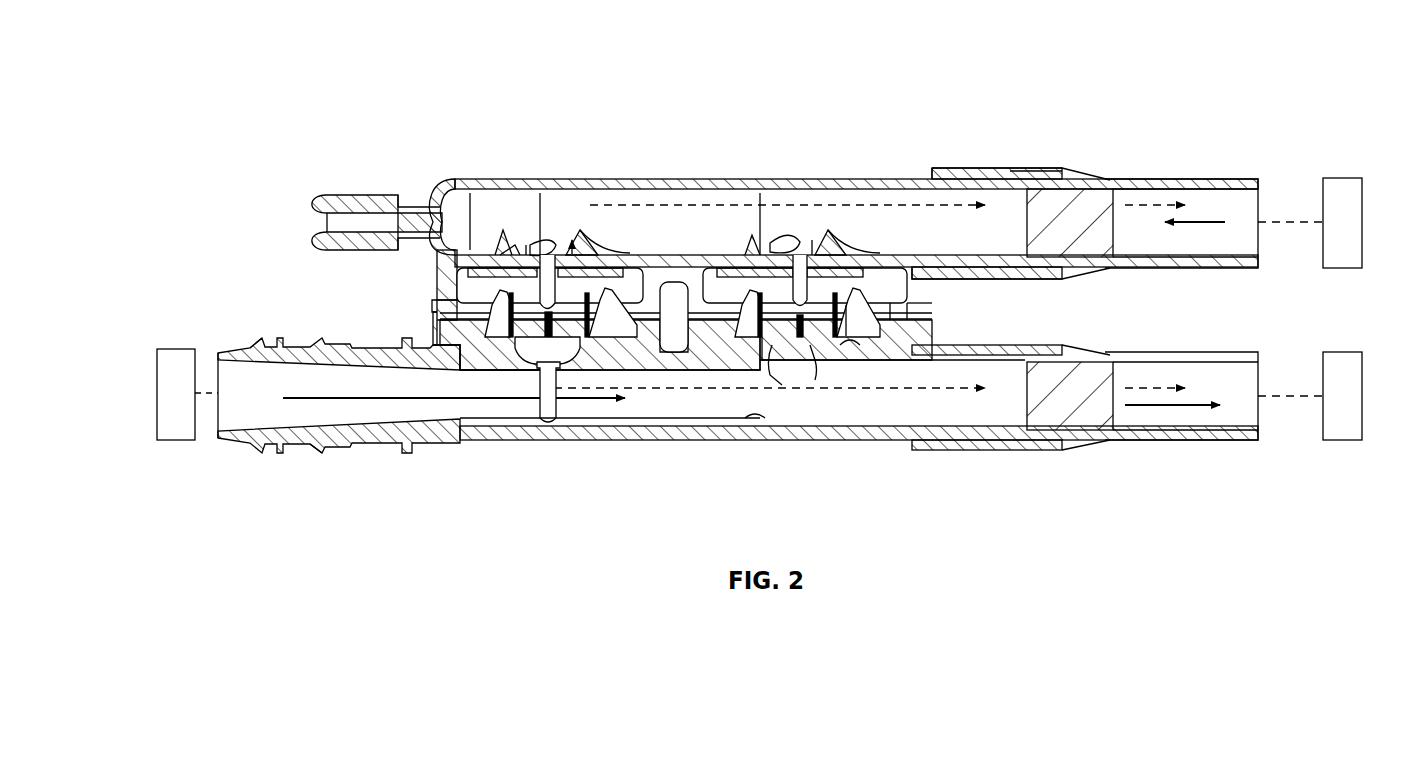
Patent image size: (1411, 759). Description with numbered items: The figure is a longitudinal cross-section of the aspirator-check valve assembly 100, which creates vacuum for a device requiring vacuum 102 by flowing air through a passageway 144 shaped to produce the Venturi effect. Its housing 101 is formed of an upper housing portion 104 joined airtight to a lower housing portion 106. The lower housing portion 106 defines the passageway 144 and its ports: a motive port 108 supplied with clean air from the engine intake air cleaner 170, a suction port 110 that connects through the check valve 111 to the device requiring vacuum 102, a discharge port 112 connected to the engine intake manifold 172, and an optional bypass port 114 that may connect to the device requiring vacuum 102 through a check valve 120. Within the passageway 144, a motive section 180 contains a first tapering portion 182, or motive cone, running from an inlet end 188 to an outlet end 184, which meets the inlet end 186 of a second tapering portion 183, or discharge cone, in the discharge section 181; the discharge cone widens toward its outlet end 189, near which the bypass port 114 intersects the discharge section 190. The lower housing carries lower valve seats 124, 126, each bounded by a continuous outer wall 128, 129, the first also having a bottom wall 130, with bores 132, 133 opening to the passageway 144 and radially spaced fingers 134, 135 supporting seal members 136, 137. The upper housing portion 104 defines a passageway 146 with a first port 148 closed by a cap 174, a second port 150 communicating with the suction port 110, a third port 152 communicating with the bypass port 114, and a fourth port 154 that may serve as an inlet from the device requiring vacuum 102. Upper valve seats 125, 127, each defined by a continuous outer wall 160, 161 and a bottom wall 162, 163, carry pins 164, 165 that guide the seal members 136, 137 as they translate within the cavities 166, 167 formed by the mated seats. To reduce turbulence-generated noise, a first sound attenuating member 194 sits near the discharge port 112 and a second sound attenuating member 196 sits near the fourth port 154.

The aspirator-check valve assembly 100 is at (380, 66).
The housing 101 is at (448, 196).
The device requiring vacuum 102 is at (1345, 178).
The upper housing portion 104 is at (762, 193).
The lower housing portion 106 is at (445, 420).
The motive port 108 is at (218, 358).
The suction port 110 is at (536, 364).
The check valve 111 is at (598, 238).
The discharge port 112 is at (1066, 442).
The bypass port 114 is at (778, 372).
The check valve 120 is at (840, 244).
The lower valve seat 124 is at (445, 340).
The upper valve seat 125 is at (700, 256).
The lower valve seat 126 is at (950, 352).
The upper valve seat 127 is at (898, 290).
The continuous outer wall 128 is at (600, 355).
The continuous outer wall 129 is at (848, 348).
The bottom wall 130 is at (540, 378).
The bore 132 is at (566, 373).
The bore 133 is at (845, 430).
The radially spaced fingers 134 is at (433, 303).
The radially spaced fingers 135 is at (852, 325).
The seal member 136 is at (500, 235).
The seal member 137 is at (750, 252).
The passageway 144 is at (445, 405).
The passageway 146 is at (768, 253).
The first port 148 is at (330, 226).
The second port 150 is at (540, 240).
The third port 152 is at (785, 236).
The fourth port 154 is at (1035, 178).
The continuous outer wall 160 is at (437, 277).
The continuous outer wall 161 is at (905, 292).
The bottom wall 162 is at (575, 238).
The bottom wall 163 is at (818, 252).
The pin 164 is at (505, 224).
The pin 165 is at (820, 365).
The cavity 166 is at (623, 296).
The cavity 167 is at (880, 330).
The engine intake air cleaner 170 is at (188, 445).
The engine intake manifold 172 is at (1345, 442).
The cap 174 is at (360, 195).
The motive section 180 is at (305, 352).
The discharge section 181 is at (715, 430).
The first tapering portion 182 is at (315, 432).
The second tapering portion 183 is at (760, 415).
The outlet end 184 is at (540, 412).
The inlet end 186 is at (560, 410).
The inlet end 188 is at (258, 412).
The outlet end 189 is at (772, 430).
The discharge section 190 is at (912, 438).
The first sound attenuating member 194 is at (1095, 442).
The second sound attenuating member 196 is at (1095, 196).